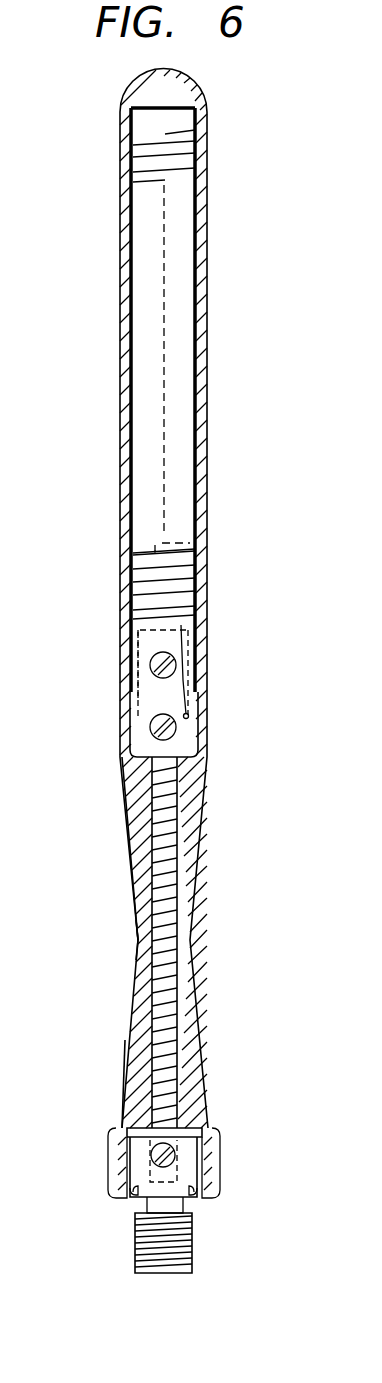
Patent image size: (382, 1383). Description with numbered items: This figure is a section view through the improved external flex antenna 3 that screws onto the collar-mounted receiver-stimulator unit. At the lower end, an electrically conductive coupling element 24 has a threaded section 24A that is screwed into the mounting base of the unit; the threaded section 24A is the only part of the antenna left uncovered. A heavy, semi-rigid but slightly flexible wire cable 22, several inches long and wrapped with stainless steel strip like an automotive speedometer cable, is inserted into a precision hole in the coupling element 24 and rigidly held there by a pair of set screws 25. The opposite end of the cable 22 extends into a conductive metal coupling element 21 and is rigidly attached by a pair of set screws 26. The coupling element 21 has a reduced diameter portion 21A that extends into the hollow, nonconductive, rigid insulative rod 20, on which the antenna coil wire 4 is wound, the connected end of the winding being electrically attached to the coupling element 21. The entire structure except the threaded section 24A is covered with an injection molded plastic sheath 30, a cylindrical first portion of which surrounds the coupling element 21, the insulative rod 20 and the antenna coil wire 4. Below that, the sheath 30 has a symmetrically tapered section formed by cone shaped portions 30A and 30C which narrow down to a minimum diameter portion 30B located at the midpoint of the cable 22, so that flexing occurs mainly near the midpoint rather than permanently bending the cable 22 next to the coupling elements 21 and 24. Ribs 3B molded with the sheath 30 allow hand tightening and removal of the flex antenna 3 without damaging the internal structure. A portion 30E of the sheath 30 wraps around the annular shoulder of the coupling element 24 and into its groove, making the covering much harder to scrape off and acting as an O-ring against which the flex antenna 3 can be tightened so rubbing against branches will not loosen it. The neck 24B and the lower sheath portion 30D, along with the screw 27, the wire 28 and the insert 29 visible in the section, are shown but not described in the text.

The external flex antenna 3 is at (285, 1139).
The ribs 3B is at (112, 1132).
The antenna coil wire 4 is at (155, 553).
The insulative rod 20 is at (188, 120).
The conductive coupling element 21 is at (200, 740).
The reduced diameter portion 21A is at (150, 636).
The wire cable 22 is at (180, 977).
The conductive coupling element 24 is at (140, 1158).
The threaded section 24A is at (135, 1252).
The neck 24B is at (193, 1192).
The set screws 25 is at (177, 1158).
The set screws 26 is at (150, 727).
The upper screw 27 is at (153, 660).
The wire 28 is at (190, 713).
The insert 29 is at (185, 632).
The plastic sheath 30 is at (208, 385).
The tapered portion 30A is at (125, 800).
The minimum diameter portion 30B is at (138, 943).
The tapered portion 30C is at (125, 1065).
The left retaining hook 30D is at (127, 1178).
The sheath portion 30E is at (196, 1200).